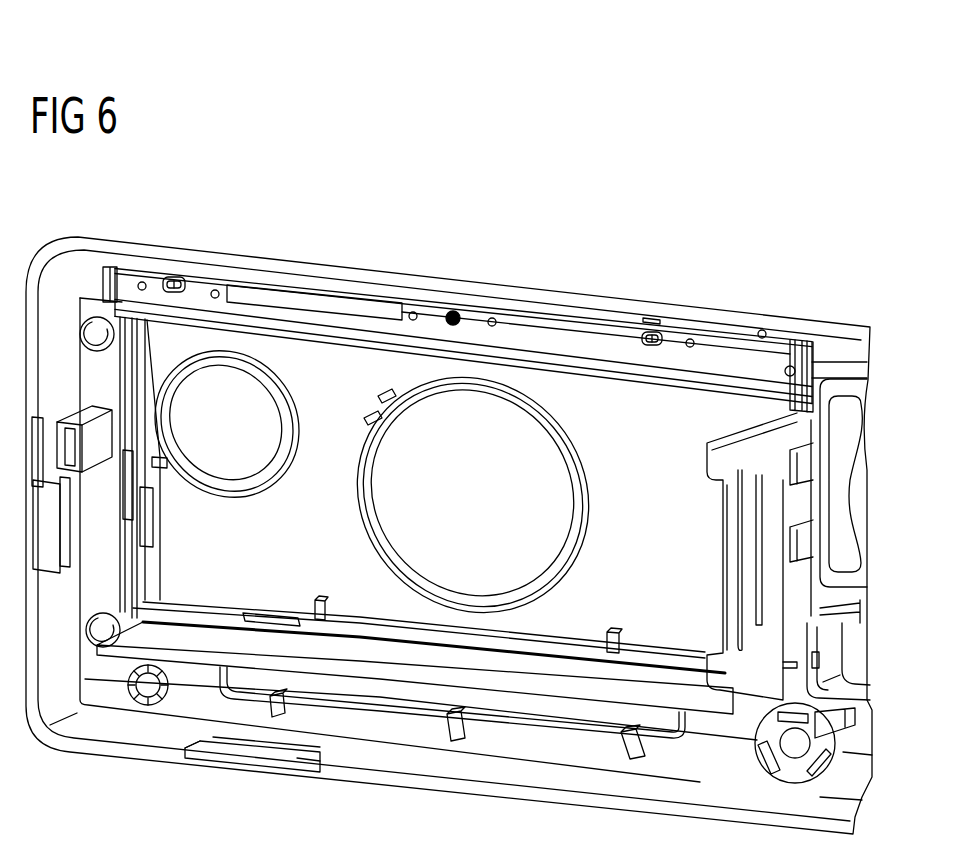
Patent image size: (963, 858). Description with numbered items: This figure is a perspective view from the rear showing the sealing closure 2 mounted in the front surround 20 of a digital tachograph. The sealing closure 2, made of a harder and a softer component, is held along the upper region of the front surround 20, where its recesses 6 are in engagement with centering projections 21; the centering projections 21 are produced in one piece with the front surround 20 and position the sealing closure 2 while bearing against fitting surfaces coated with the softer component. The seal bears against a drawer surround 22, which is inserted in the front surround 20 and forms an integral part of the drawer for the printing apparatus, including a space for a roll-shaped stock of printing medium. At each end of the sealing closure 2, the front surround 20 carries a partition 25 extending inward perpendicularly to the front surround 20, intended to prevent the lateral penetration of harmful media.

The front surround 20 is at (122, 248).
The partition 25 is at (103, 283).
The sealing closure 2 is at (558, 332).
The recess 6 is at (424, 267).
The centering projection 21 is at (170, 276).
The drawer surround 22 is at (592, 603).